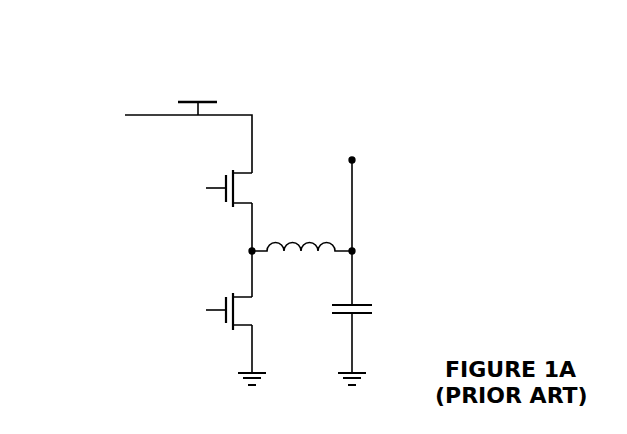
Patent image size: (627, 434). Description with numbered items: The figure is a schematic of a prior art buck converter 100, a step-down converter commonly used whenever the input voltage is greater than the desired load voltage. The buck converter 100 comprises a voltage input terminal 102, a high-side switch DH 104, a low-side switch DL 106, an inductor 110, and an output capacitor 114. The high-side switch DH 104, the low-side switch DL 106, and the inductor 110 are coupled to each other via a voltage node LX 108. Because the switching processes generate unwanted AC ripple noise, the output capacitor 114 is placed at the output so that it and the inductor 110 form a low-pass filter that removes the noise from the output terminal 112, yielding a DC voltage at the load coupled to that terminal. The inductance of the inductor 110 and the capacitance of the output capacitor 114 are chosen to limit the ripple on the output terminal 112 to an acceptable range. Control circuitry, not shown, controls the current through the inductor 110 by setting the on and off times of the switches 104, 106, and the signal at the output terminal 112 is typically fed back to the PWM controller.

The buck converter 100 is at (502, 106).
The voltage input terminal 102 is at (188, 72).
The high-side switch DH 104 is at (220, 185).
The low-side switch DL 106 is at (220, 307).
The voltage node LX 108 is at (220, 248).
The inductor 110 is at (303, 238).
The output terminal VOUT 112 is at (383, 153).
The output capacitor COUT 114 is at (363, 302).